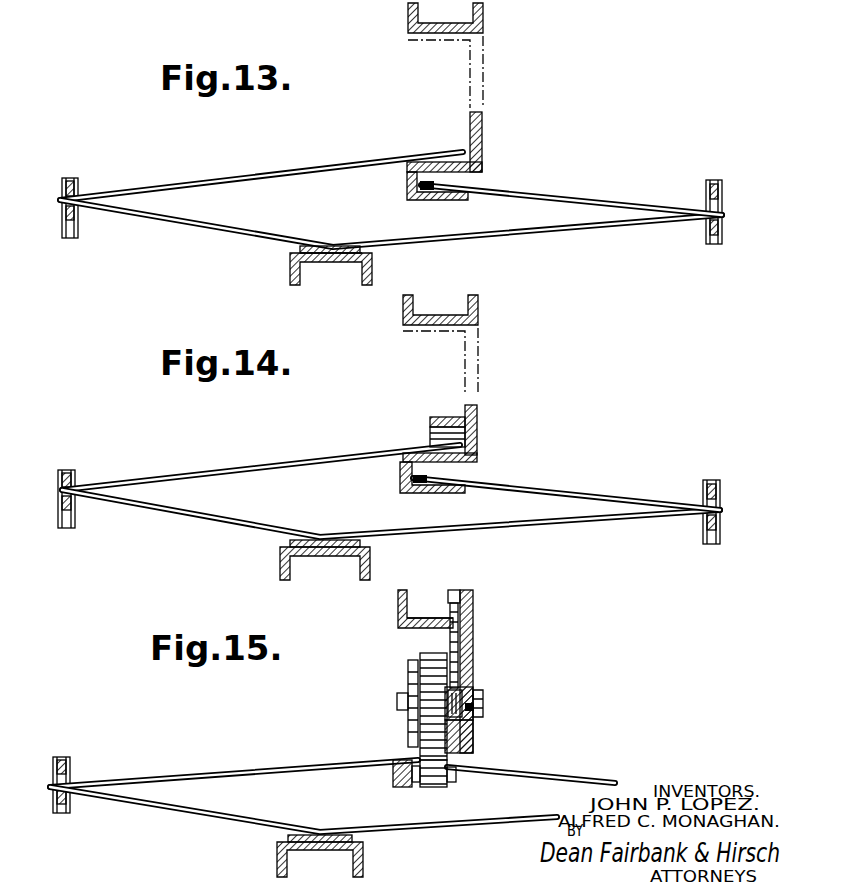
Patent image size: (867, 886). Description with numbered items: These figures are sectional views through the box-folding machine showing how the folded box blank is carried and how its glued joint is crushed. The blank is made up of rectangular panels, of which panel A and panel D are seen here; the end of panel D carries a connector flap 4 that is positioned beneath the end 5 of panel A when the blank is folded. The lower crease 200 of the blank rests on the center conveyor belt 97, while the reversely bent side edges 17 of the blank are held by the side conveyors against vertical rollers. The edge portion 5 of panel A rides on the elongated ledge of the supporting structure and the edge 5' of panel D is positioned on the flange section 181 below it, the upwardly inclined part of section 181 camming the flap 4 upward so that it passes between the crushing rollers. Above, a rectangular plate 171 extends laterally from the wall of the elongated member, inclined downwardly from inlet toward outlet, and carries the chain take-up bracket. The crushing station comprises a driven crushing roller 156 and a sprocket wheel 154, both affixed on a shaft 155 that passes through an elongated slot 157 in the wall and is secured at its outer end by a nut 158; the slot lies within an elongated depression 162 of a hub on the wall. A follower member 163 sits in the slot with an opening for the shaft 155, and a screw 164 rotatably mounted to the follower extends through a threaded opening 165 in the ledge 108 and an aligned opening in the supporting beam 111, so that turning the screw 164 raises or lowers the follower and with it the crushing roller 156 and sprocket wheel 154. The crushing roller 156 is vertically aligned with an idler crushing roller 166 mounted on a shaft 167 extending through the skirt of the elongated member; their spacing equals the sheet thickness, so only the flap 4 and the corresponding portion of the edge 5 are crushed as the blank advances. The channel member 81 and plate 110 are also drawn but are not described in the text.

In FIG. 13, the channel member 81 is at (304, 309).
In FIG. 14, the channel member 81 is at (322, 573).
In FIG. 15, the channel member 81 is at (277, 857).
In FIG. 13, the side edges 17 is at (62, 200).
In FIG. 14, the side edges 17 is at (60, 490).
In FIG. 15, the side edges 17 is at (61, 785).
In FIG. 13, the panel A is at (302, 166).
In FIG. 14, the panel A is at (277, 462).
In FIG. 15, the panel A is at (263, 767).
In FIG. 14, the panel D is at (583, 470).
In FIG. 15, the panel D is at (600, 777).
In FIG. 13, the end of panel A 5 is at (463, 139).
In FIG. 14, the end of panel A 5 is at (457, 414).
In FIG. 13, the edge of panel D 5' is at (571, 186).
In FIG. 13, the horizontal plate 110 is at (432, 161).
In FIG. 13, the connector flap 4 is at (427, 192).
In FIG. 14, the connector flap 4 is at (413, 497).
In FIG. 13, the flange section 181 is at (440, 197).
In FIG. 14, the flange section 181 is at (443, 496).
In FIG. 13, the lower crease 200 is at (335, 243).
In FIG. 13, the conveyor belt 97 is at (376, 254).
In FIG. 14, the rectangular plate 171 is at (430, 435).
In FIG. 15, the ledge 108 is at (402, 628).
In FIG. 15, the supporting beam 111 is at (418, 616).
In FIG. 15, the screw 164 is at (460, 592).
In FIG. 15, the threaded opening 165 is at (474, 632).
In FIG. 15, the follower member 163 is at (474, 687).
In FIG. 15, the elongated slot 157 is at (485, 692).
In FIG. 15, the shaft 155 is at (485, 711).
In FIG. 15, the nut 158 is at (482, 719).
In FIG. 15, the elongated depression 162 is at (474, 741).
In FIG. 15, the sprocket wheel 154 is at (419, 678).
In FIG. 15, the crushing roller 156 is at (409, 714).
In FIG. 15, the idler crushing roller 166 is at (428, 787).
In FIG. 15, the shaft 167 is at (456, 778).